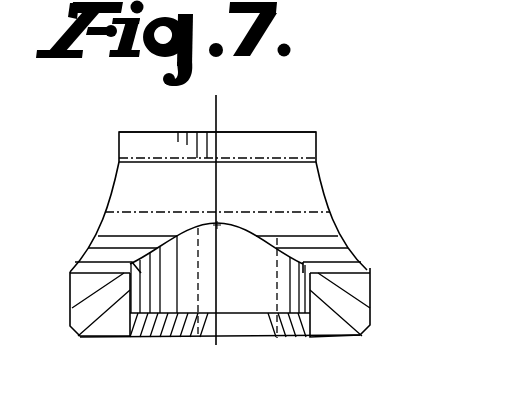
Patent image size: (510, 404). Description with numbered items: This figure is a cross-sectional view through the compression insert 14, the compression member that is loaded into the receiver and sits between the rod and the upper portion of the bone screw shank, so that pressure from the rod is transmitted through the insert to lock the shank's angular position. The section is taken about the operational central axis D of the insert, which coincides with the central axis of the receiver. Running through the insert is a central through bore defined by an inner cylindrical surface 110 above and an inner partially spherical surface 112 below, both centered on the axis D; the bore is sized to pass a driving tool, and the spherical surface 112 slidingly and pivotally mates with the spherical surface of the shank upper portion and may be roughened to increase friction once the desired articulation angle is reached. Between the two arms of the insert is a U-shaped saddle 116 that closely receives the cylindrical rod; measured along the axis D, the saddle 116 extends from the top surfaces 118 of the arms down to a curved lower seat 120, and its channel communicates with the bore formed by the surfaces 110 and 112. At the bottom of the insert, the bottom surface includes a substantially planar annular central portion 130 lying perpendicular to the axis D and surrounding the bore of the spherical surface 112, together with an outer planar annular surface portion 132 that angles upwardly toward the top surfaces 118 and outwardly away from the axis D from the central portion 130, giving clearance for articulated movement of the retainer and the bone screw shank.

The compression insert 14 is at (317, 142).
The inner cylindrical surface 110 is at (257, 253).
The inner partially spherical surface 112 is at (258, 322).
The saddle 116 is at (305, 186).
The top surfaces 118 is at (275, 133).
The curved lower seat 120 is at (100, 267).
The central portion 130 is at (182, 313).
The outer surface portion 132 is at (103, 338).
The central axis D is at (216, 113).